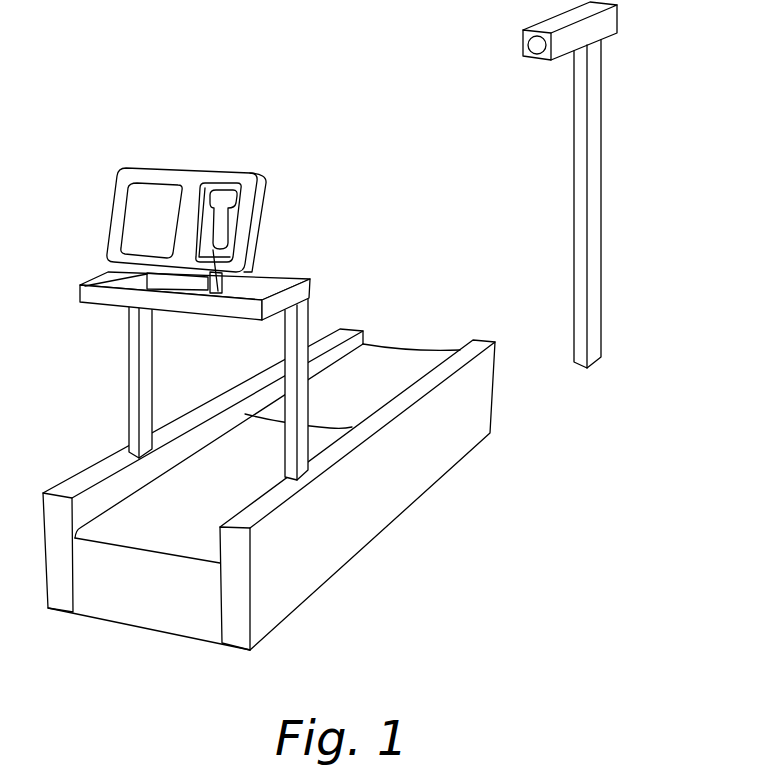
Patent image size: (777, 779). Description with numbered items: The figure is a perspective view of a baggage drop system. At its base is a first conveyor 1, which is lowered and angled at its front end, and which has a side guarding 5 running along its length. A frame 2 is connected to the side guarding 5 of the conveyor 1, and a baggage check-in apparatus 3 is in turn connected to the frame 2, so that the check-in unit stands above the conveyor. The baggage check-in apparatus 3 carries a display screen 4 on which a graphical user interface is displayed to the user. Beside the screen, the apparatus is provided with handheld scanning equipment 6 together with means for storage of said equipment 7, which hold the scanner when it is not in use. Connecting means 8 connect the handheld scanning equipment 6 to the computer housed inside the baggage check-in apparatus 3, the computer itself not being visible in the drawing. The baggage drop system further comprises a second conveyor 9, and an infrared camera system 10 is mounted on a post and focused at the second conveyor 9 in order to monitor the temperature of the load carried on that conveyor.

The conveyor 1 is at (274, 463).
The frame 2 is at (132, 390).
The baggage check-in apparatus 3 is at (181, 190).
The display screen 4 is at (150, 215).
The side guarding 5 is at (365, 433).
The handheld scanning equipment 6 is at (229, 190).
The means for storage of the equipment 7 is at (230, 223).
The connecting means 8 is at (230, 287).
The second conveyor 9 is at (395, 363).
The infrared camera system 10 is at (593, 152).